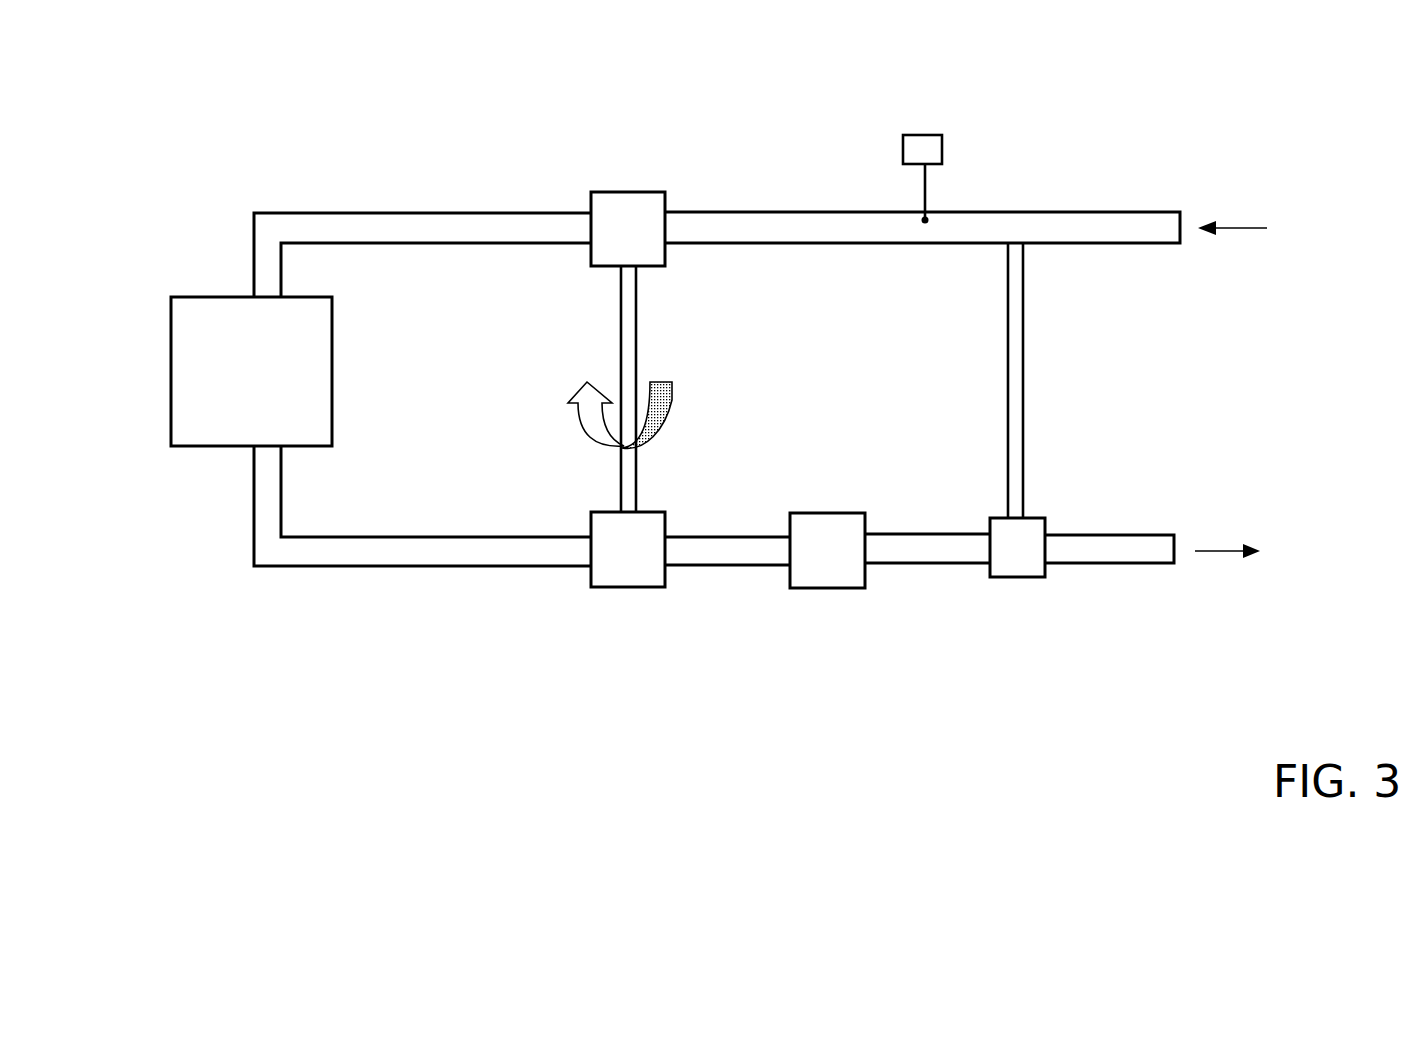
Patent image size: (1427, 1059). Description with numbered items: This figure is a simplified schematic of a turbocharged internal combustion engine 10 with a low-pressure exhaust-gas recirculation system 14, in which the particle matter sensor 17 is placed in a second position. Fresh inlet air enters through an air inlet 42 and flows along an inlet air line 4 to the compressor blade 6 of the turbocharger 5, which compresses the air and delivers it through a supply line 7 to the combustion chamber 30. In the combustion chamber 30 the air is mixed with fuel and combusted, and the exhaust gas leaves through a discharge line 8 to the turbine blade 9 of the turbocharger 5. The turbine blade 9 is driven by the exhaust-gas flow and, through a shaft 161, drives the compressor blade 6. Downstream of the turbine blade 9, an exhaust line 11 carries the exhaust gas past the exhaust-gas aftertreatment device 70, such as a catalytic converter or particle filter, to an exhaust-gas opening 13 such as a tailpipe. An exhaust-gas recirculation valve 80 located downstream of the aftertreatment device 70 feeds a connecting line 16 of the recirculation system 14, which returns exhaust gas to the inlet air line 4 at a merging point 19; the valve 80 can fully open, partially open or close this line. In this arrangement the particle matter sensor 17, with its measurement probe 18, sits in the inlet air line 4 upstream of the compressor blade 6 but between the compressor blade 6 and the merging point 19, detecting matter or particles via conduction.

The internal combustion engine 10 is at (182, 146).
The turbocharger 5 is at (714, 113).
The combustion chamber 30 is at (171, 446).
The supply line 7 is at (440, 222).
The discharge line 8 is at (415, 560).
The compressor blade 6 is at (665, 192).
The turbine blade 9 is at (665, 512).
The shaft 161 is at (633, 370).
The inlet air line 4 is at (753, 225).
The air inlet 42 is at (1182, 225).
The particle matter sensor 17 is at (905, 135).
The measurement probe 18 is at (925, 220).
The merging point 19 is at (1018, 212).
The connecting line 16 is at (1025, 462).
The exhaust-gas recirculation system 14 is at (1108, 432).
The exhaust line 11 is at (748, 558).
The exhaust-gas aftertreatment device 70 is at (865, 513).
The exhaust-gas recirculation valve 80 is at (990, 577).
The exhaust-gas opening 13 is at (1175, 553).